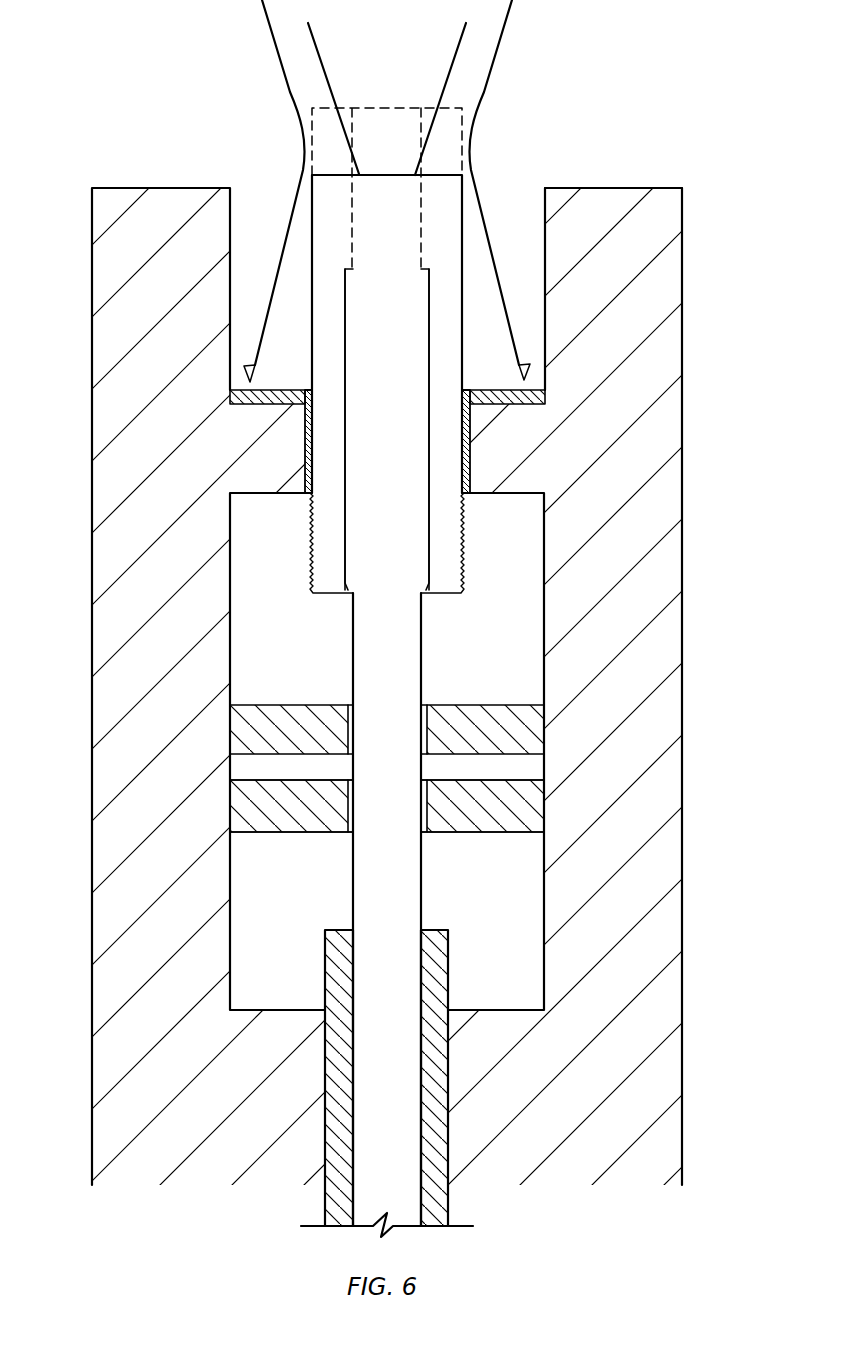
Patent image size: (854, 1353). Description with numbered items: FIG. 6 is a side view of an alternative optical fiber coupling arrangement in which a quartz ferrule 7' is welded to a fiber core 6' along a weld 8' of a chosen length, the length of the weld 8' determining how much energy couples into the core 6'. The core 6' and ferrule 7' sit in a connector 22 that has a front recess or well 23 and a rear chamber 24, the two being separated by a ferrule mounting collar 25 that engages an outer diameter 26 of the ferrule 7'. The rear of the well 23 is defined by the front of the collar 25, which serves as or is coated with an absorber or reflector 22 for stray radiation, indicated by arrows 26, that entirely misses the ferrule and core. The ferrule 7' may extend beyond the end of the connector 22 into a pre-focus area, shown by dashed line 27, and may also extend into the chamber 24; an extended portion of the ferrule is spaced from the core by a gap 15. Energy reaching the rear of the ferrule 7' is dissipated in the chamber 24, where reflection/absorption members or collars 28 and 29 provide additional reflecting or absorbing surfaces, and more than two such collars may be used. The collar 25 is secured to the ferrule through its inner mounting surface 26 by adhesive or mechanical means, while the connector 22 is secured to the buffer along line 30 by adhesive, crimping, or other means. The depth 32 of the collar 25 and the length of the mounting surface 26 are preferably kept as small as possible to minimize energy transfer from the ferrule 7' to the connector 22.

The connector 22 is at (655, 380).
The front recess or well 23 is at (540, 230).
The chamber 24 is at (507, 638).
The ferrule mounting collar 25 is at (262, 423).
The outer diameter / mounting surface 26 is at (290, 90).
The dashed line (pre-focus area) 27 is at (446, 115).
The reflection/absorption member or collar 28 is at (310, 527).
The reflection/absorption member or collar 29 is at (492, 818).
The line (buffer securing line) 30 is at (273, 1079).
The depth of collar 32 is at (508, 404).
The gap 15 is at (425, 327).
The fiber core 6' is at (354, 909).
The quartz ferrule 7' is at (303, 117).
The weld 8' is at (466, 146).